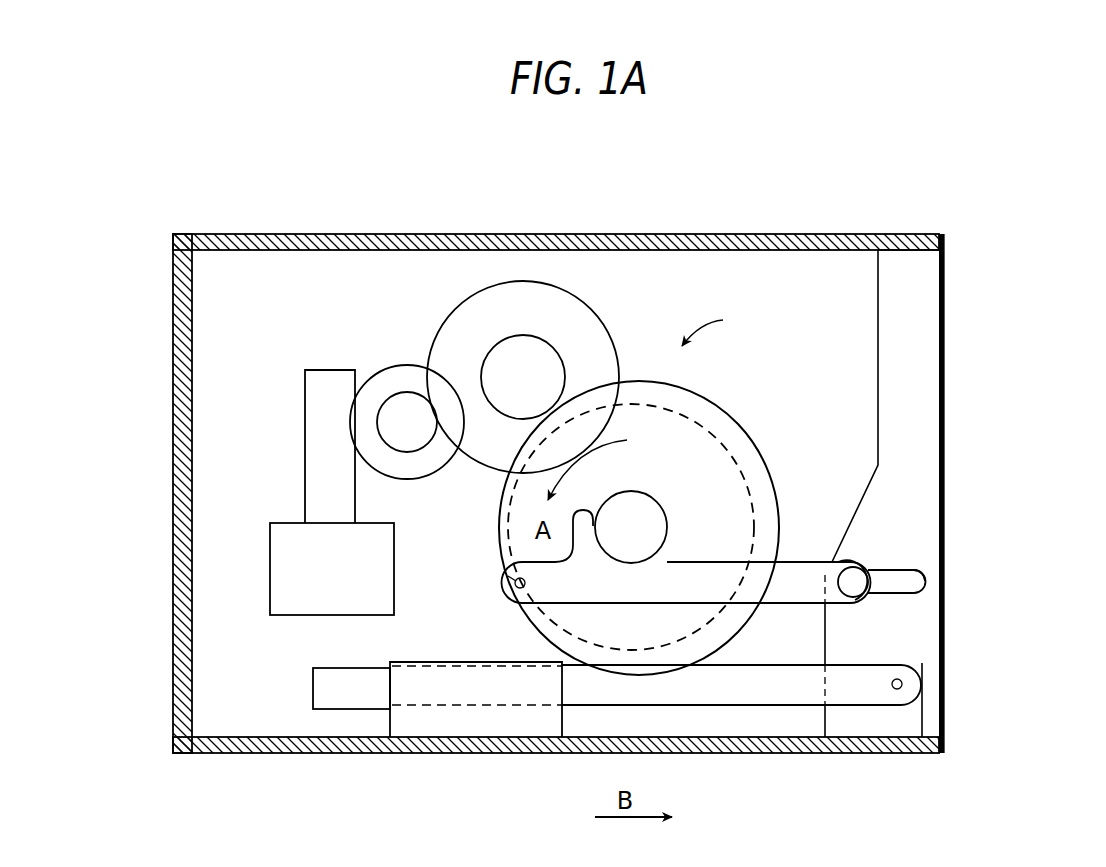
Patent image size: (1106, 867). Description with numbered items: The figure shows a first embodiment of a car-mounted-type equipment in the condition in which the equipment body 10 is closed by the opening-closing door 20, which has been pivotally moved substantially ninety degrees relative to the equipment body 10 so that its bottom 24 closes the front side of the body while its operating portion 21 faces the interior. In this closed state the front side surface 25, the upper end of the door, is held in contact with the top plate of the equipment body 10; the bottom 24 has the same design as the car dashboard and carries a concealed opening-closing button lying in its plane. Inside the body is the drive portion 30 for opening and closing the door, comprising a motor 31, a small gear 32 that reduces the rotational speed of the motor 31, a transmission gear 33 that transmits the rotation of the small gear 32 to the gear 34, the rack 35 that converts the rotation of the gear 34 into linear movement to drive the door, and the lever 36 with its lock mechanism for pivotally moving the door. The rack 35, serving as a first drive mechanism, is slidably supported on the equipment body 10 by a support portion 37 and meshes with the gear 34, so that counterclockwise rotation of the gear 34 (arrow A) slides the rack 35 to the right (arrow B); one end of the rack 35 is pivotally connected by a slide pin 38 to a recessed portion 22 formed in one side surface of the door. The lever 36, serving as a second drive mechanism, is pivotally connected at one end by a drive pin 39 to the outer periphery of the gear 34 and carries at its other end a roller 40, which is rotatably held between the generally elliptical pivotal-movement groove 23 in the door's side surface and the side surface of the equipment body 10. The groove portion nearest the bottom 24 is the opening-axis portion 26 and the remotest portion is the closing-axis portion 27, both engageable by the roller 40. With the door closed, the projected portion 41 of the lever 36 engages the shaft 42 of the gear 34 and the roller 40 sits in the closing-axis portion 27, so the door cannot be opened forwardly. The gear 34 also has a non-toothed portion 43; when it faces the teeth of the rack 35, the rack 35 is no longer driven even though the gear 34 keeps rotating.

The equipment body 10 is at (538, 234).
The opening-closing door 20 is at (1018, 310).
The operating portion 21 is at (878, 368).
The recessed portion 22 is at (870, 722).
The pivotal-movement groove 23 is at (920, 564).
The bottom 24 is at (944, 368).
The front side surface 25 is at (913, 251).
The opening-axis portion 26 is at (926, 582).
The closing-axis portion 27 is at (836, 572).
The drive portion 30 is at (716, 319).
The motor 31 is at (270, 543).
The small gear 32 is at (394, 364).
The transmission gear 33 is at (610, 332).
The gear 34 is at (740, 426).
The rack 35 is at (716, 705).
The lever 36 is at (790, 600).
The support portion 37 is at (530, 722).
The slide pin 38 is at (905, 685).
The drive pin 39 is at (505, 597).
The roller 40 is at (858, 592).
The projected portion 41 is at (593, 512).
The shaft 42 is at (668, 526).
The non-toothed portion 43 is at (497, 518).